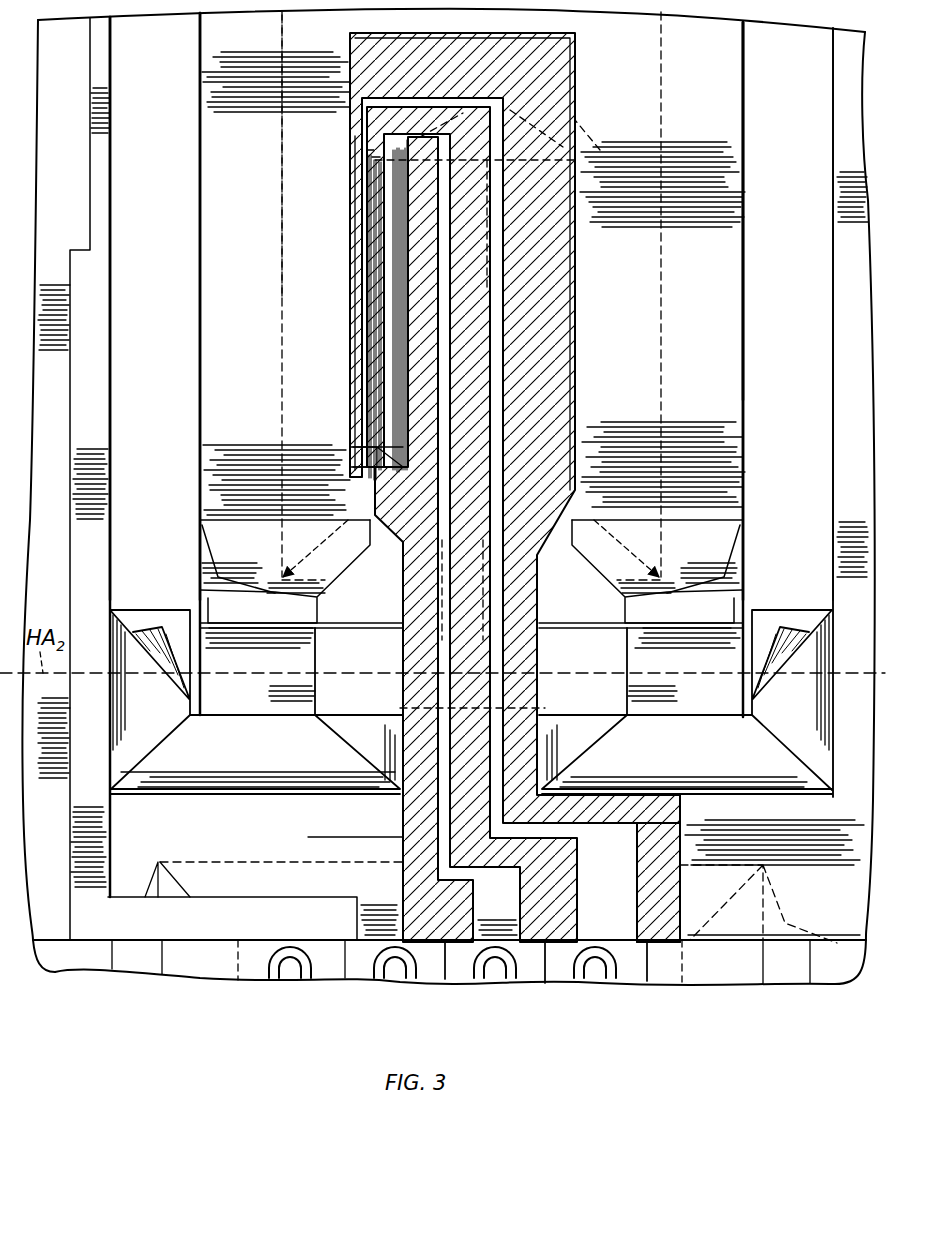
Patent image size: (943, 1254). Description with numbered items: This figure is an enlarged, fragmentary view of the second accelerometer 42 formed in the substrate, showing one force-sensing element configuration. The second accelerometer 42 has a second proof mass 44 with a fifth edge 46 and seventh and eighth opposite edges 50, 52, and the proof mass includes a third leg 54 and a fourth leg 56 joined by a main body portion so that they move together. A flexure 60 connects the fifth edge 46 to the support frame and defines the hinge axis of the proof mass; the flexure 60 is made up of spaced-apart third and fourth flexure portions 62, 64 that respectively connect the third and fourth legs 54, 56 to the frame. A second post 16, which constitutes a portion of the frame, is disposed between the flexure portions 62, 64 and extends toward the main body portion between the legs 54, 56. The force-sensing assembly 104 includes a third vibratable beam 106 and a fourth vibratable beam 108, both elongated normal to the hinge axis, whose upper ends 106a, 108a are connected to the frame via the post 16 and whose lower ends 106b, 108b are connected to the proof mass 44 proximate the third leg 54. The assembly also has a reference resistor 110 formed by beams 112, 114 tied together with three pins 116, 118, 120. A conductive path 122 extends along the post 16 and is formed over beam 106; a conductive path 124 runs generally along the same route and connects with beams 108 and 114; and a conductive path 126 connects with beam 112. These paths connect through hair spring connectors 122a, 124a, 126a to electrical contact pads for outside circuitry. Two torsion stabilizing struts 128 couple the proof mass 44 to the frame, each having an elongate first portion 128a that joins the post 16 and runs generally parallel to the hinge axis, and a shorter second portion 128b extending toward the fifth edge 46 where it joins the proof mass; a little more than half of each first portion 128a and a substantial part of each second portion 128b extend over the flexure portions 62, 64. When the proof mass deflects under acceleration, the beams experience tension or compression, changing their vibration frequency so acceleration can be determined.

The second post 16 is at (578, 74).
The second accelerometer 42 is at (768, 232).
The second proof mass 44 is at (752, 80).
The fifth edge 46 is at (267, 588).
The seventh edge 50 is at (202, 130).
The eighth edge 52 is at (748, 126).
The third leg 54 is at (230, 293).
The fourth leg 56 is at (710, 290).
The flexure 60 is at (243, 722).
The third flexure portion 62 is at (210, 658).
The fourth flexure portion 64 is at (733, 658).
The force-sensing assembly 104 is at (260, 212).
The third vibratable beam 106 is at (370, 207).
The upper end of third beam 106a is at (368, 190).
The lower end of third beam 106b is at (356, 443).
The fourth vibratable beam 108 is at (392, 240).
The upper end of fourth beam 108a is at (378, 188).
The lower end of fourth beam 108b is at (377, 483).
The reference resistor 110 is at (378, 323).
The beam 112 is at (402, 395).
The beam 114 is at (398, 420).
The pin 116 is at (396, 272).
The pin 118 is at (392, 316).
The pin 120 is at (394, 355).
The conductive path 122 is at (660, 897).
The hair spring connector 122a is at (645, 980).
The conductive path 124 is at (547, 905).
The hair spring connector 124a is at (545, 980).
The conductive path 126 is at (430, 902).
The hair spring connector 126a is at (445, 965).
The second torsion stabilizing strut 128 is at (390, 630).
The first portion of strut 128a is at (399, 594).
The second portion of strut 128b is at (269, 554).